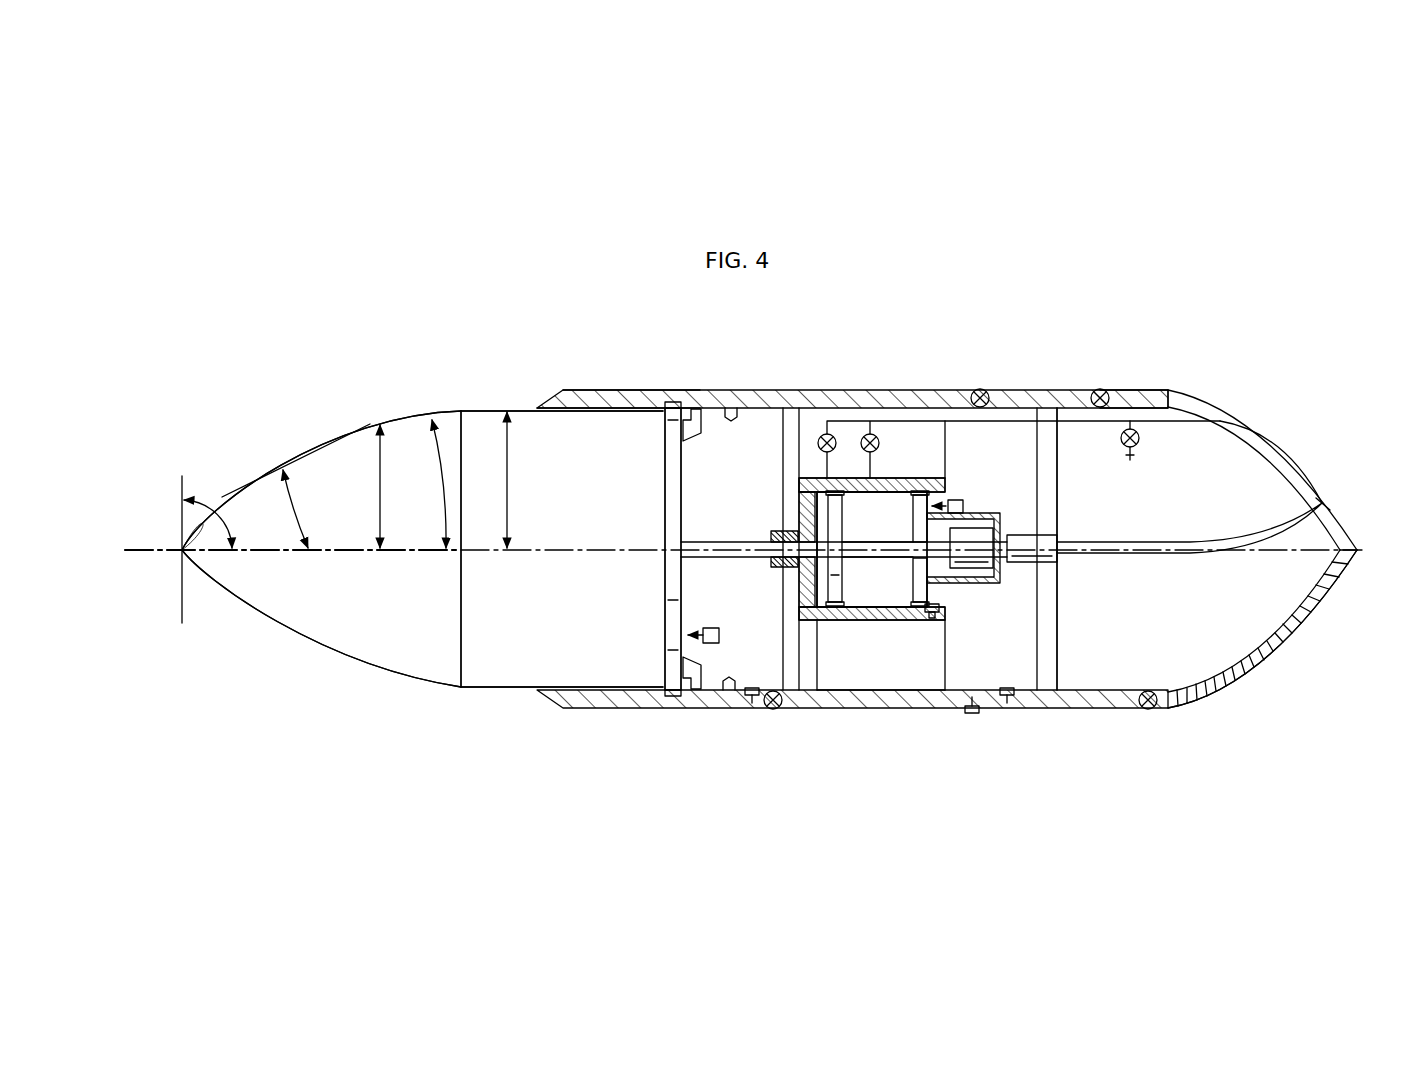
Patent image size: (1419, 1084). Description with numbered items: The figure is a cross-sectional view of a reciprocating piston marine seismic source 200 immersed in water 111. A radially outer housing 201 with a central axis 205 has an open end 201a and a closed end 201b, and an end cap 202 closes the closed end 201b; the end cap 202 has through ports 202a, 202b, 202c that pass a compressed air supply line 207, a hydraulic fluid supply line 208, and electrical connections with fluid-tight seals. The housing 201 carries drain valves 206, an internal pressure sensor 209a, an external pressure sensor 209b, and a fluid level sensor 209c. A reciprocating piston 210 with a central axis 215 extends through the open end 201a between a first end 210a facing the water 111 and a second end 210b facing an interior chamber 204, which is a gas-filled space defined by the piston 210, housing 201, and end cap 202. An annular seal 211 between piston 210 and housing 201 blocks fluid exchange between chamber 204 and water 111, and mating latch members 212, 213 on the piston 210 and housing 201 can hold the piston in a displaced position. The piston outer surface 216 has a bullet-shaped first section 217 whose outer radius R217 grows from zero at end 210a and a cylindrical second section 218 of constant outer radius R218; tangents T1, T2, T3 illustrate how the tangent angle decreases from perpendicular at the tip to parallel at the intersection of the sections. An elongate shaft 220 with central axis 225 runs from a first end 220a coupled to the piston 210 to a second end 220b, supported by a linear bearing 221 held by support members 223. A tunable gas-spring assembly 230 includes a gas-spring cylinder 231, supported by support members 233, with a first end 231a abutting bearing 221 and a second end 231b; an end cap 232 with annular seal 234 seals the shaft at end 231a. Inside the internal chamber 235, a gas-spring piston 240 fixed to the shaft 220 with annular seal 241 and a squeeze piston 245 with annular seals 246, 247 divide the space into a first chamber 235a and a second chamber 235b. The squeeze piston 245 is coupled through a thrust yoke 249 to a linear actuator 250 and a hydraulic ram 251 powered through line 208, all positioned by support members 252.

The marine seismic source 200 is at (331, 300).
The water 111 is at (1031, 296).
The radially outer housing 201 is at (937, 390).
The open end 201a is at (563, 390).
The closed end 201b is at (1150, 390).
The end cap 202 is at (1268, 658).
The through port 202a is at (1222, 418).
The through port 202b is at (1318, 500).
The through port 202c is at (1320, 605).
The interior chamber 204 is at (1212, 618).
The central axis 205 is at (358, 556).
The central axis 215 is at (358, 556).
The central axis 225 is at (358, 556).
The drain valve 206 is at (773, 710).
The compressed air supply line 207 is at (1183, 422).
The hydraulic fluid supply line 208 is at (1165, 545).
The internal pressure sensor 209a is at (1010, 698).
The external pressure sensor 209b is at (972, 713).
The fluid level sensor 209c is at (752, 700).
The reciprocating piston 210 is at (488, 408).
The first end 210a is at (170, 535).
The second end 210b is at (665, 488).
The annular seal 211 is at (667, 405).
The latch member 212 is at (692, 412).
The latch member 213 is at (731, 407).
The radially outer surface 216 is at (395, 408).
The first section 217 is at (345, 676).
The second section 218 is at (490, 695).
The elongate shaft 220 is at (698, 540).
The first end 220a is at (688, 565).
The second end 220b is at (865, 492).
The linear bearing 221 is at (775, 566).
The support member 223 is at (783, 640).
The tunable gas-spring assembly 230 is at (957, 478).
The gas-spring cylinder 231 is at (910, 615).
The first end 231a is at (810, 488).
The second end 231b is at (920, 615).
The end cap 232 is at (731, 629).
The support member 233 is at (920, 690).
The annular seal 234 is at (800, 522).
The internal chamber 235 is at (893, 531).
The first chamber 235a is at (832, 592).
The second chamber 235b is at (862, 600).
The gas-spring piston 240 is at (808, 538).
The annular seal 241 is at (835, 605).
The squeeze piston 245 is at (930, 590).
The annular seal 246 is at (935, 625).
The annular seal 247 is at (913, 560).
The thrust yoke 249 is at (1040, 590).
The linear actuator 250 is at (985, 525).
The hydraulic ram 251 is at (1057, 540).
The support member 252 is at (1057, 645).
The tangent T1 is at (178, 600).
The tangent T2 is at (418, 409).
The tangent T3 is at (235, 495).
The outer radius R217 is at (378, 500).
The outer radius R218 is at (512, 445).